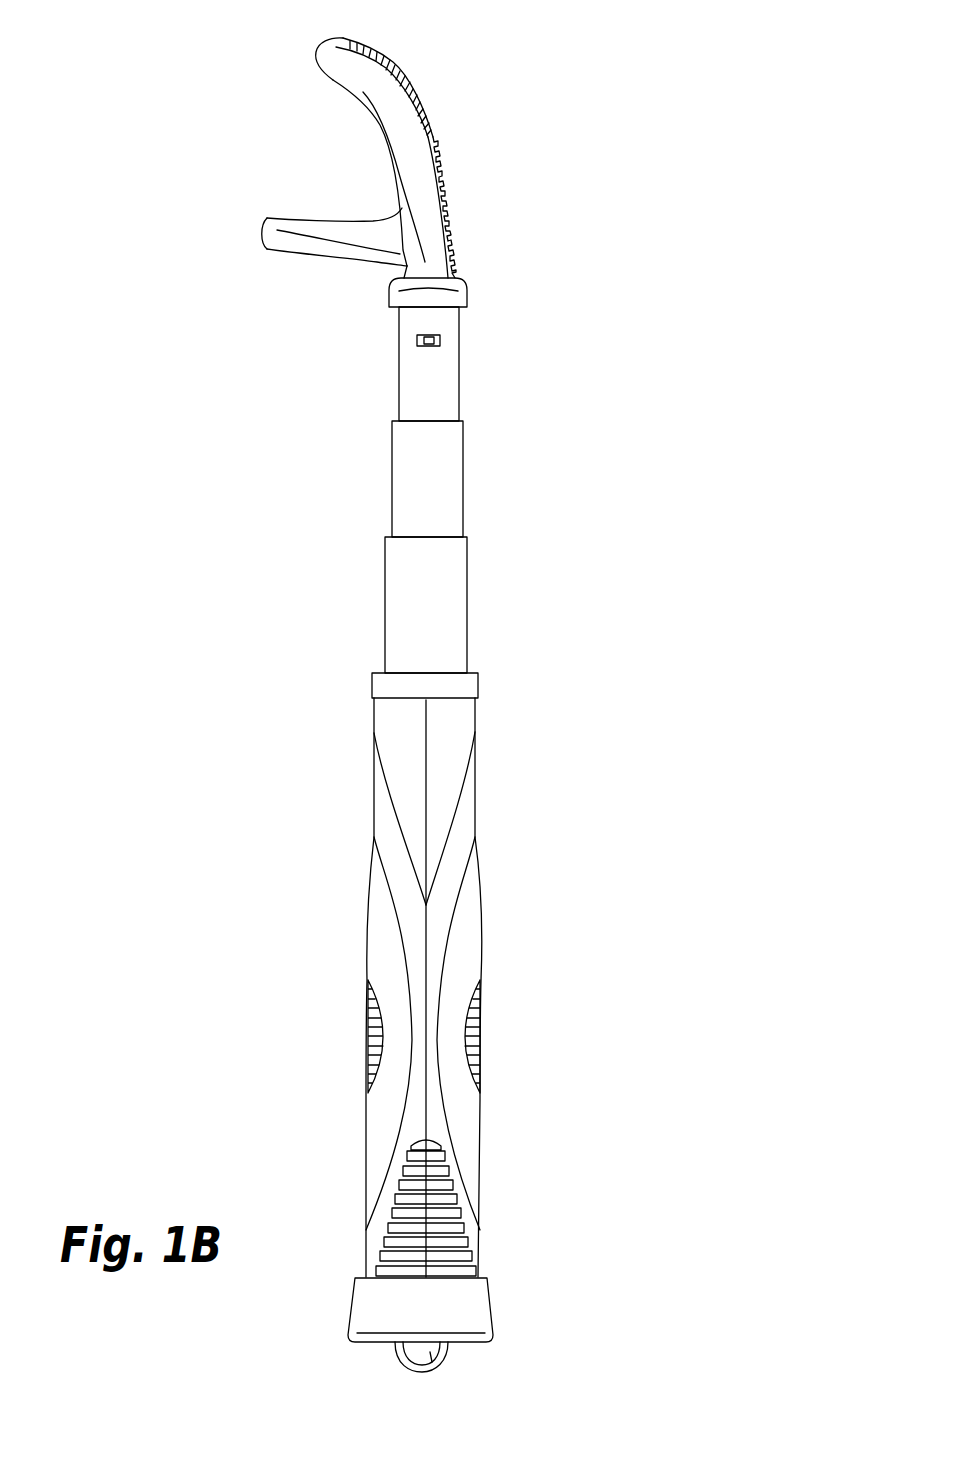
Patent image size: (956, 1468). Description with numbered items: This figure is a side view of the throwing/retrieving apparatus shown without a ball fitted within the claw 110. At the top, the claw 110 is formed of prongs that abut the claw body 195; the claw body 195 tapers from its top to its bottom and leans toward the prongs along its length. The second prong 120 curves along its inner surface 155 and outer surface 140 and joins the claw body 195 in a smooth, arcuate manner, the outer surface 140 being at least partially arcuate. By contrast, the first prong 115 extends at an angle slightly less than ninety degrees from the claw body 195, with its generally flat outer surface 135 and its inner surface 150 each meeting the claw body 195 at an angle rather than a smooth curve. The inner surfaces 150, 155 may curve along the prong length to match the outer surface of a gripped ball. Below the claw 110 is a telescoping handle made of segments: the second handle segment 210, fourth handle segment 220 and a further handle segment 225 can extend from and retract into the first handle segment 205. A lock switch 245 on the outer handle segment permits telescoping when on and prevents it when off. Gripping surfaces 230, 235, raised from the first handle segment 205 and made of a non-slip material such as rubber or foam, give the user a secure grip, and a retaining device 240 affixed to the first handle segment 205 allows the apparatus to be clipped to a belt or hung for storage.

The claw 110 is at (457, 168).
The first prong 115 is at (377, 262).
The second prong 120 is at (428, 130).
The outer surface of the first prong 135 is at (317, 257).
The outer surface of the second prong 140 is at (407, 78).
The inner surface of the first prong 150 is at (297, 218).
The inner surface of the second prong 155 is at (339, 85).
The claw body 195 is at (464, 280).
The first handle segment 205 is at (443, 761).
The second handle segment 210 is at (449, 584).
The fourth handle segment 220 is at (462, 468).
The handle segment 225 is at (449, 392).
The gripping surface 230 is at (480, 1020).
The gripping surface 235 is at (450, 1205).
The retaining device 240 is at (450, 1368).
The lock switch 245 is at (440, 342).